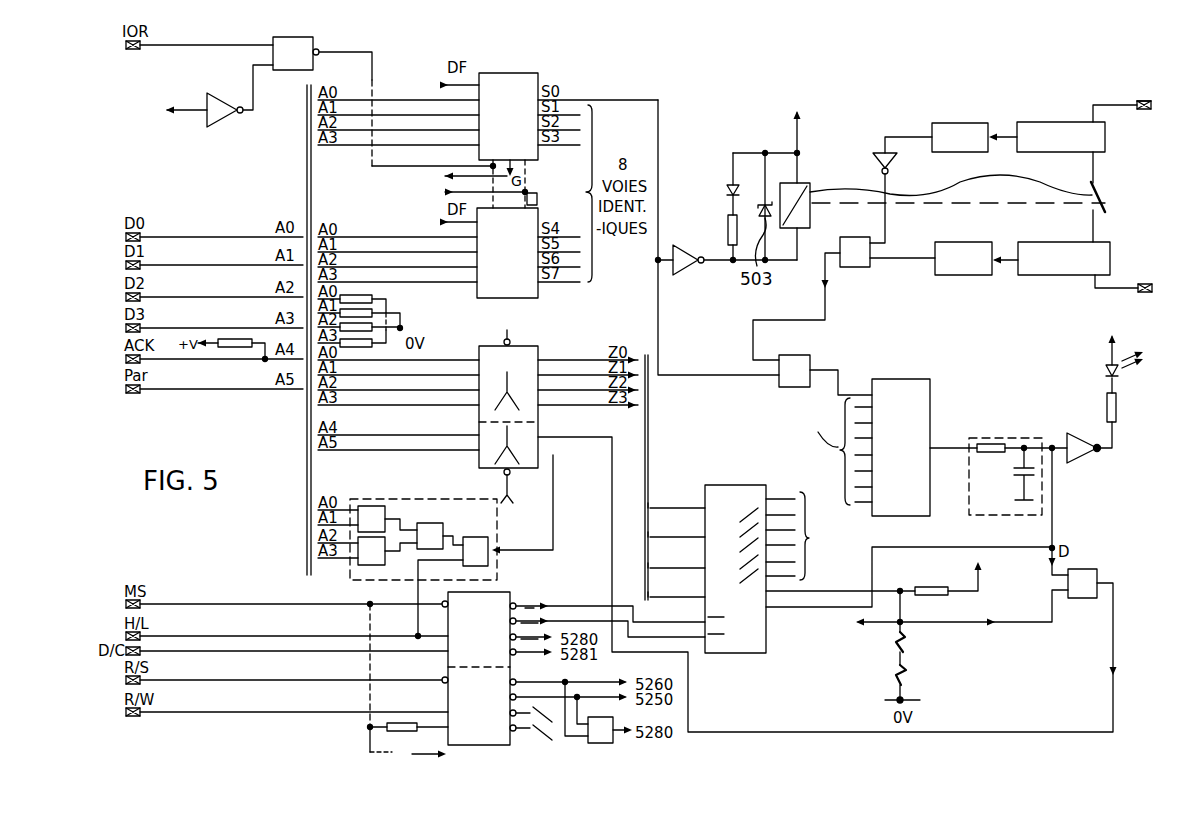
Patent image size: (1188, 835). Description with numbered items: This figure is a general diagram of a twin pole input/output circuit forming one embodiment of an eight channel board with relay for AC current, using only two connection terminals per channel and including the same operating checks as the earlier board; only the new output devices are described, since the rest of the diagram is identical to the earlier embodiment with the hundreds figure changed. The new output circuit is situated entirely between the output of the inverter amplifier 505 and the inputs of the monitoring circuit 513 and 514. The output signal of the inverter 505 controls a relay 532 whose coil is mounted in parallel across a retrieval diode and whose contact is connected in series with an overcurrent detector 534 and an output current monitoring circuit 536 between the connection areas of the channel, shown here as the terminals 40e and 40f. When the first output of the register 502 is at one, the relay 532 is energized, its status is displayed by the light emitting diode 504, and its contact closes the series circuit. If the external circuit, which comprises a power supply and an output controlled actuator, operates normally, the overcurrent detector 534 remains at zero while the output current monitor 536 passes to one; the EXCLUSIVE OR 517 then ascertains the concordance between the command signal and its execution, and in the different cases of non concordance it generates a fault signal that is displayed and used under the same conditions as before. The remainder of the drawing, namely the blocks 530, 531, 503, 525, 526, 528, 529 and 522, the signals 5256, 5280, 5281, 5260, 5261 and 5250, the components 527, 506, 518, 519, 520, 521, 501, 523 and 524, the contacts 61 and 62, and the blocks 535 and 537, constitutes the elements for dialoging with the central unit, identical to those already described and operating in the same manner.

The AND gate 530 is at (312, 37).
The inverter 531 is at (224, 128).
The register 502 is at (541, 71).
The second register 503 is at (541, 210).
The register output signal 5256 is at (506, 312).
The DF control signal 5280 is at (438, 86).
The DF control signal 5281 is at (437, 224).
The clock signal 5260 is at (461, 195).
The gate signal 5261 is at (452, 179).
The disable signal 5250 is at (519, 517).
The address decoder 525 is at (541, 349).
The exclusive-OR comparator 528 is at (449, 478).
The pull-up resistor 527 is at (366, 748).
The flip-flop and disable/clear circuit 526 is at (500, 592).
The AND gate 529 is at (611, 744).
The code module 522 is at (731, 484).
The inverter amplifier 505 is at (696, 272).
The resistor 506 is at (727, 228).
The light emitting diode 504 is at (727, 186).
The relay 532 is at (957, 186).
The monitoring circuit input 514 is at (876, 157).
The monitoring circuit input 513 is at (856, 268).
The EXCLUSIVE OR 517 is at (812, 357).
The 8-channel control OR gate 518 is at (931, 397).
The RC filter 519 is at (1012, 437).
The driver amplifier 520 is at (1094, 455).
The resistor 521 is at (1105, 405).
The light emitting diode 501 is at (1104, 372).
The OR gate 523 is at (1080, 568).
The resistor 524 is at (950, 573).
The switch contact 62 is at (908, 645).
The switch contact 61 is at (908, 680).
The receiver block 535 is at (978, 100).
The overcurrent detector 534 is at (1070, 100).
The terminal 40e is at (1132, 99).
The output current monitoring circuit 536 is at (1051, 276).
The receiver block 537 is at (963, 276).
The terminal 40f is at (1134, 276).